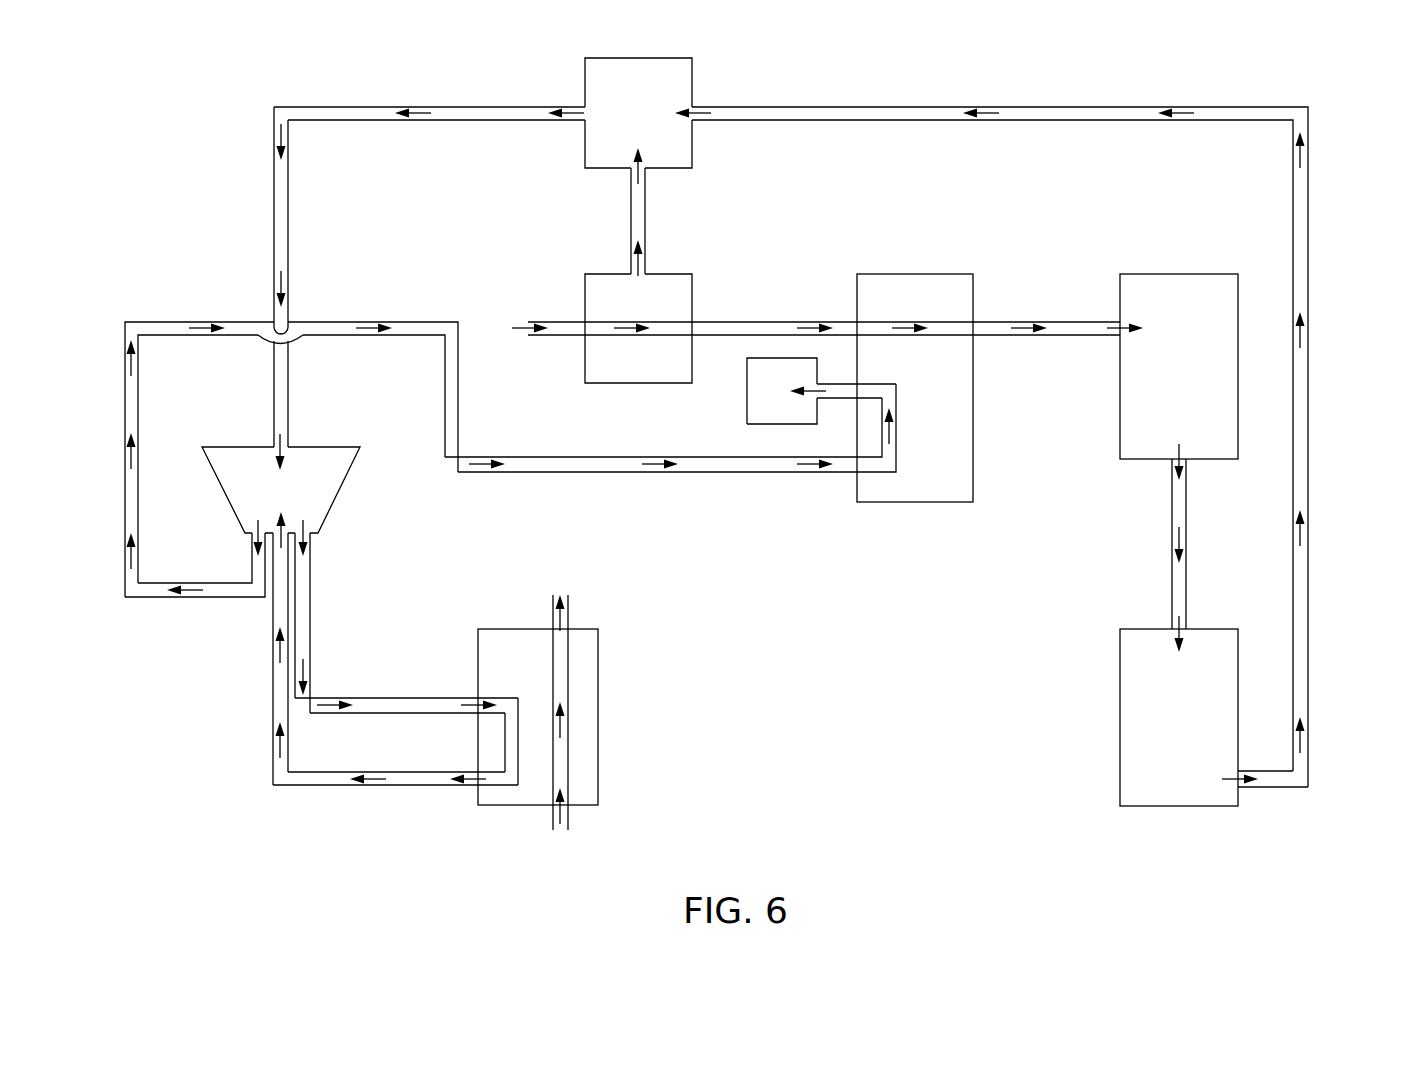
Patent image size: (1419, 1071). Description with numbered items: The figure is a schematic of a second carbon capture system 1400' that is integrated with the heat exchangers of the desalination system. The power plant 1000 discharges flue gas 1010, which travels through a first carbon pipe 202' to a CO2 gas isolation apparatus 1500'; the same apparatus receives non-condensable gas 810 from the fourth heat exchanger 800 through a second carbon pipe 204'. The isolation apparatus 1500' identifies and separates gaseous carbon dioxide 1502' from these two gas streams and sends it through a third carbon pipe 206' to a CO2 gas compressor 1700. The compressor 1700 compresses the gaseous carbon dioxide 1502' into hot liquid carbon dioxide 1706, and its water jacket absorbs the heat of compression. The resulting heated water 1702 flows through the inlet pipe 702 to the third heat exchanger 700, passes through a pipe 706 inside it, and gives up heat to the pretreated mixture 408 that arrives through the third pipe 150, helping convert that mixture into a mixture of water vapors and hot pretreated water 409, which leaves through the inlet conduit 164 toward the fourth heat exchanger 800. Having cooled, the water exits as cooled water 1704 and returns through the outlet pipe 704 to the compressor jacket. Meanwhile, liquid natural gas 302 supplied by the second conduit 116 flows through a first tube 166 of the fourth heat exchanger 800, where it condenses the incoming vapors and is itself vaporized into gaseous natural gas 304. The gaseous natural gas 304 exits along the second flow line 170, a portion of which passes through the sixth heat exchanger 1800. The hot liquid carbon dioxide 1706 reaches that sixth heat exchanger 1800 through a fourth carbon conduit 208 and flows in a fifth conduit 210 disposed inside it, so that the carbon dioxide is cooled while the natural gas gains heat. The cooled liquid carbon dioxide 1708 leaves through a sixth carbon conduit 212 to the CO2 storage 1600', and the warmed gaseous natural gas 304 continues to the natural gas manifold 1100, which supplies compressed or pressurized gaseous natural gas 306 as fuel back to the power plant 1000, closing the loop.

The carbon capture system 1400' is at (676, 445).
The gaseous carbon dioxide 1502' is at (429, 86).
The third carbon pipe 206' is at (335, 277).
The CO2 gas isolation apparatus 1500' is at (648, 85).
The first carbon pipe 202' is at (1046, 447).
The flue gas 1010 is at (1300, 740).
The second carbon pipe 204' is at (681, 222).
The non-condensable gas 810 is at (630, 178).
The fourth heat exchanger 800 is at (693, 283).
The liquid natural gas 302 is at (521, 320).
The second conduit 116 is at (566, 320).
The first tube 166 is at (612, 320).
The gaseous natural gas 304 is at (815, 320).
The second flow line 170 is at (906, 320).
The sixth heat exchanger 1800 is at (912, 503).
The natural gas manifold 1100 is at (1180, 273).
The gaseous natural gas 306 is at (1188, 538).
The power plant 1000 is at (1119, 718).
The CO2 storage 1600' is at (737, 391).
The cooled liquid carbon dioxide 1708 is at (816, 425).
The sixth carbon conduit 212 is at (842, 383).
The fifth conduit 210 is at (897, 432).
The fourth carbon conduit 208 is at (124, 498).
The hot liquid carbon dioxide 1706 is at (190, 598).
The CO2 gas compressor 1700 is at (338, 500).
The heated water 1702 is at (311, 672).
The inlet pipe 702 is at (446, 697).
The pipe 706 is at (505, 740).
The outlet pipe 704 is at (434, 787).
The cooled water 1704 is at (372, 787).
The third heat exchanger 700 is at (599, 718).
The mixture of water vapors and hot pretreated water 409 is at (552, 620).
The inlet conduit 164 is at (569, 622).
The pretreated mixture 408 is at (552, 808).
The third pipe 150 is at (570, 812).